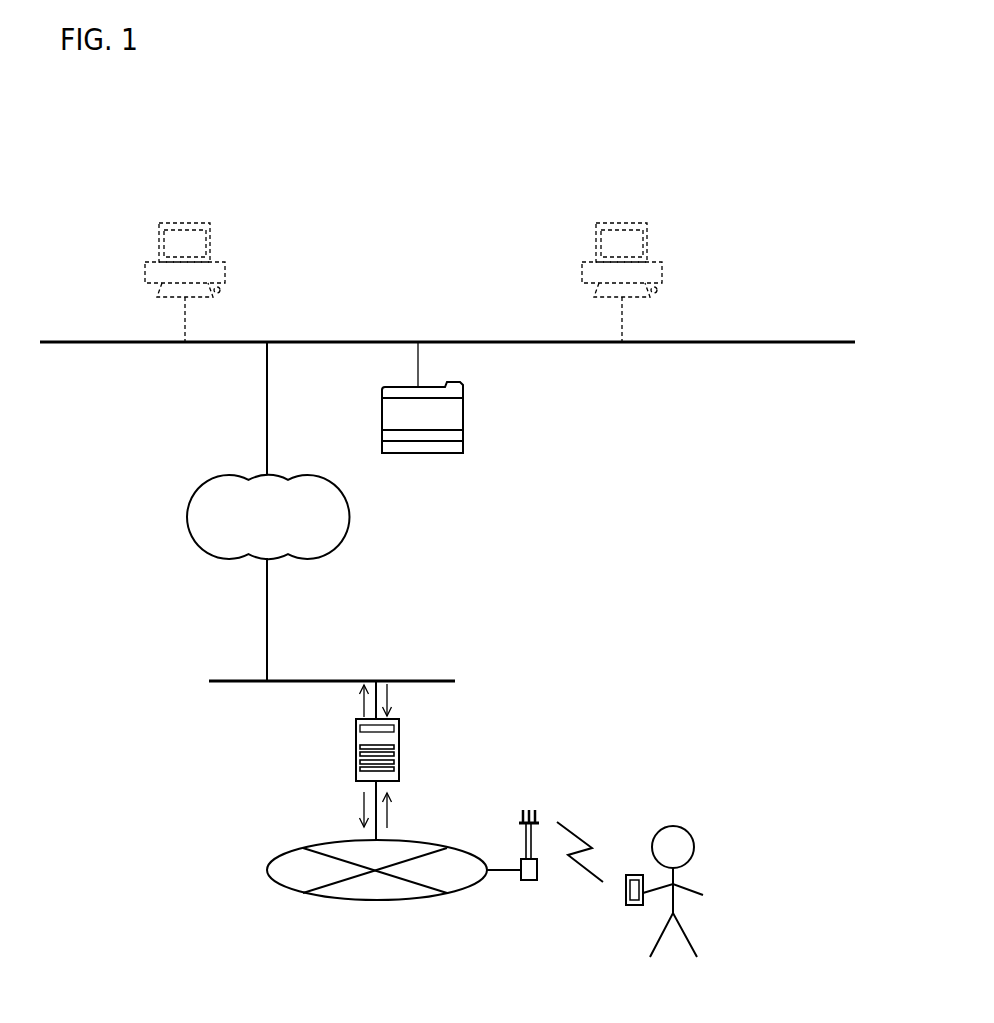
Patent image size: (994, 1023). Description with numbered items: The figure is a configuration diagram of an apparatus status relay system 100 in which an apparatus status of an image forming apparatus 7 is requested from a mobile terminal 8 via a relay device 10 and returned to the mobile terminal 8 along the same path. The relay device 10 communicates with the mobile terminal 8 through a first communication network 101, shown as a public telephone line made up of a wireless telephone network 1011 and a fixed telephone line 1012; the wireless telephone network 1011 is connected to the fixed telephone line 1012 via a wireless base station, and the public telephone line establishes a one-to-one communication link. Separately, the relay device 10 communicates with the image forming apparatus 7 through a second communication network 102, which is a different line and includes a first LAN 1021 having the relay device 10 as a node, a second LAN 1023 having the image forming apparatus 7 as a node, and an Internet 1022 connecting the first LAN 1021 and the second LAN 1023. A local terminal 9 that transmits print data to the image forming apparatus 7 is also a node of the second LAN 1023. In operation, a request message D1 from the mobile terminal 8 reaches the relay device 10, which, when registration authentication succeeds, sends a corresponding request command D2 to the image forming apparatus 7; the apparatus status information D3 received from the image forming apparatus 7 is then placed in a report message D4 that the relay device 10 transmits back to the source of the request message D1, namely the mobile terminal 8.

The apparatus status relay system 100 is at (772, 196).
The local terminal 9 is at (145, 272).
The second LAN 1023 is at (345, 342).
The image forming apparatus 7 is at (465, 408).
The second communication network 102 is at (154, 589).
The Internet 1022 is at (352, 517).
The first LAN 1021 is at (418, 680).
The relay device 10 is at (355, 735).
The request message D1 is at (403, 810).
The request command D2 is at (345, 701).
The apparatus status information D3 is at (403, 700).
The report message D4 is at (345, 809).
The fixed telephone line 1012 is at (432, 840).
The wireless telephone network 1011 is at (578, 810).
The first communication network 101 is at (589, 722).
The mobile terminal 8 is at (625, 900).